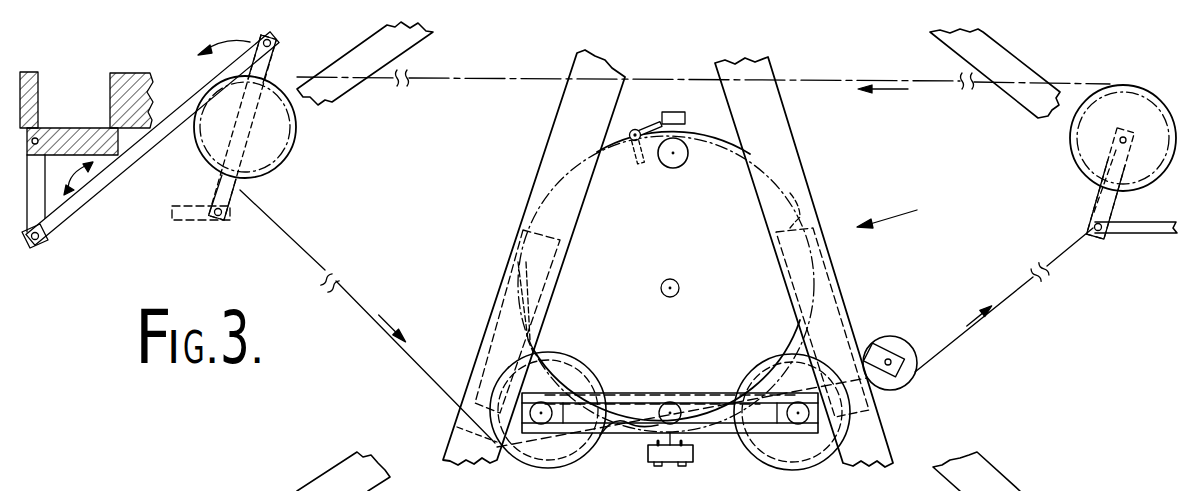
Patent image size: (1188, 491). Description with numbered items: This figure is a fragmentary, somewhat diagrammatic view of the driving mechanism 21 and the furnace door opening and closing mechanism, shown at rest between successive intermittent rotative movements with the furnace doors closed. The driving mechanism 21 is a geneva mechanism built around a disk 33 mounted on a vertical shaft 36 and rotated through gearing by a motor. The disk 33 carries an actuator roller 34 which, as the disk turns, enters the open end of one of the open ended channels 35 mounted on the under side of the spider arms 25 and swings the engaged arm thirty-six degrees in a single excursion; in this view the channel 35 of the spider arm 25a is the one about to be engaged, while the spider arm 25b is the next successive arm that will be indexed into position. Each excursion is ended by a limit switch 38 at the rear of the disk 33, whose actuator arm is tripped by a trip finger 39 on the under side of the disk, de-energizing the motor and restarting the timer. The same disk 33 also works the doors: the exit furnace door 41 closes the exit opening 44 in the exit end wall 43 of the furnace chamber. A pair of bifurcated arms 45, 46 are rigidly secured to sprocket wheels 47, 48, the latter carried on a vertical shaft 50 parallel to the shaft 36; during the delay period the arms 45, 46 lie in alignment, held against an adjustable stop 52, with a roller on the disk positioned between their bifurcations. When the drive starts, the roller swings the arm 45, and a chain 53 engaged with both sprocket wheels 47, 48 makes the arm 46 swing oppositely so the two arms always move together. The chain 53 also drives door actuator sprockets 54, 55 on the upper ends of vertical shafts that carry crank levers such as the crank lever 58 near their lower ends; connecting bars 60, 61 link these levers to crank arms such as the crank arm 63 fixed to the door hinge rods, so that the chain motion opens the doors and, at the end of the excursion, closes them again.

The driving mechanism 21 is at (904, 215).
The spider arms 25 is at (800, 164).
The spider arm 25a is at (538, 174).
The spider arm 25b is at (358, 86).
The disk 33 is at (723, 143).
The actuator roller 34 is at (684, 143).
The open ended channels 35 is at (520, 262).
The vertical shaft 36 is at (680, 289).
The limit switch 38 is at (662, 112).
The trip finger 39 is at (647, 168).
The exit furnace door 41 is at (84, 104).
The exit end wall 43 is at (134, 73).
The exit opening 44 is at (38, 88).
The bifurcated arm 45 is at (716, 433).
The bifurcated arm 46 is at (612, 436).
The sprocket wheel 47 is at (806, 464).
The sprocket wheel 48 is at (552, 464).
The vertical shaft 50 is at (541, 416).
The adjustable stop 52 is at (672, 468).
The chain 53 is at (964, 337).
The door actuator sprocket 54 is at (272, 50).
The door actuator sprocket 55 is at (283, 165).
The crank lever 58 is at (1097, 200).
The connecting bar 60 is at (1130, 233).
The connecting bar 61 is at (112, 180).
The crank arm 63 is at (48, 198).